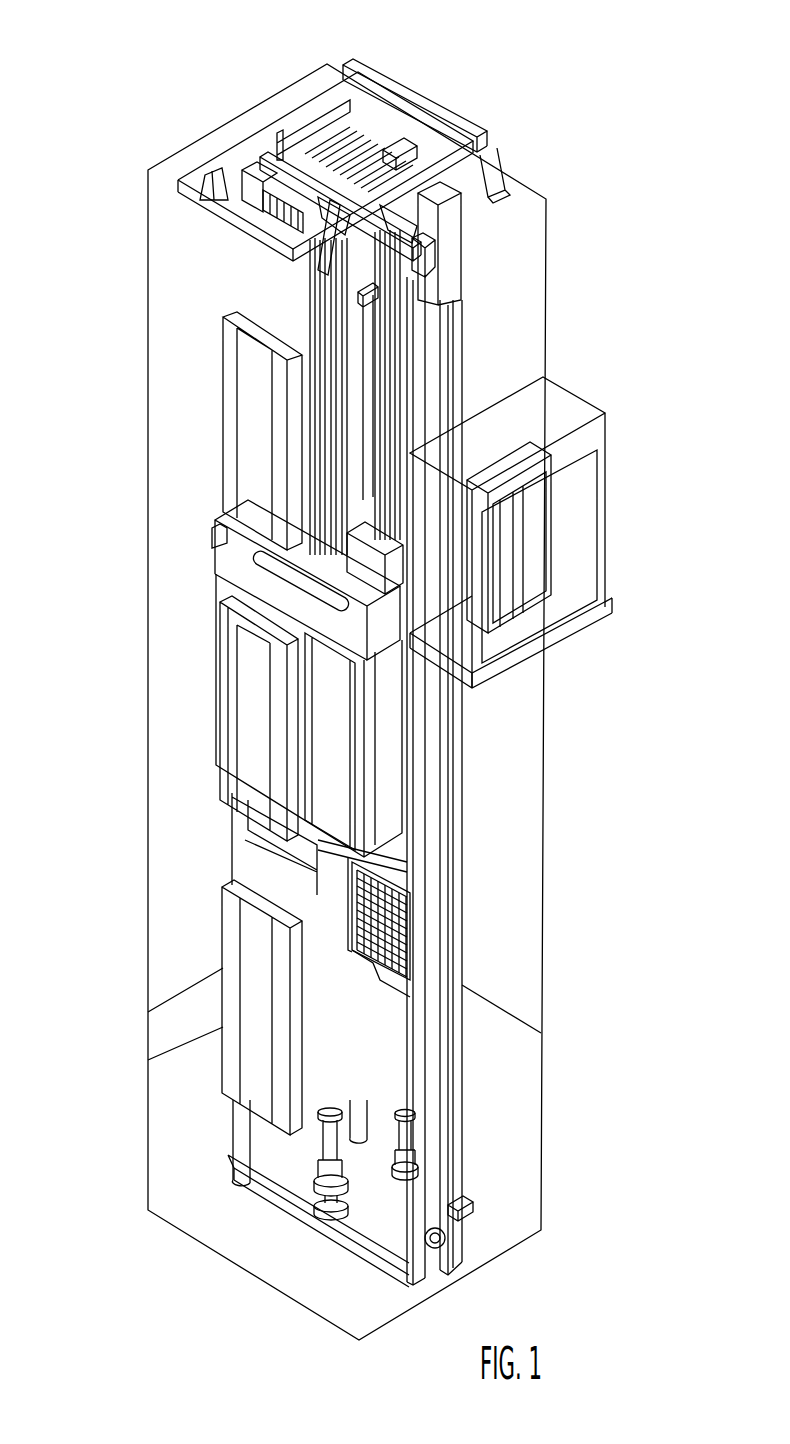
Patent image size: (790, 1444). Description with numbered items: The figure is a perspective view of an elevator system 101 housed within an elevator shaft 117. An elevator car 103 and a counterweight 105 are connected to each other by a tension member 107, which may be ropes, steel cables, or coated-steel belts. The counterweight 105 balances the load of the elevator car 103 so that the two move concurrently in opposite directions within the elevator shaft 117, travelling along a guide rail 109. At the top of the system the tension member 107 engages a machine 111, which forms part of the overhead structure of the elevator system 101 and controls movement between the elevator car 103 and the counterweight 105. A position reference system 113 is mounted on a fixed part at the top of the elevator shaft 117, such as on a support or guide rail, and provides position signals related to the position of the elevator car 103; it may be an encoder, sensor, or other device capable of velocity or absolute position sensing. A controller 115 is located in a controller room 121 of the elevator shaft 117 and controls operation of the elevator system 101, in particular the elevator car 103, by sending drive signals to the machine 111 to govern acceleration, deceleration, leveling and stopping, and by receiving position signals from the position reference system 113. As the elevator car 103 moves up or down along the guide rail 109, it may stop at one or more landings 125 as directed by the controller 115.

The elevator system 101 is at (566, 92).
The elevator car 103 is at (342, 745).
The counterweight 105 is at (398, 934).
The tension member 107 is at (345, 419).
The guide rail 109 is at (430, 858).
The machine 111 is at (257, 172).
The position reference system 113 is at (431, 262).
The controller 115 is at (552, 547).
The elevator shaft 117 is at (201, 865).
The controller room 121 is at (610, 412).
The landings 125 is at (227, 415).